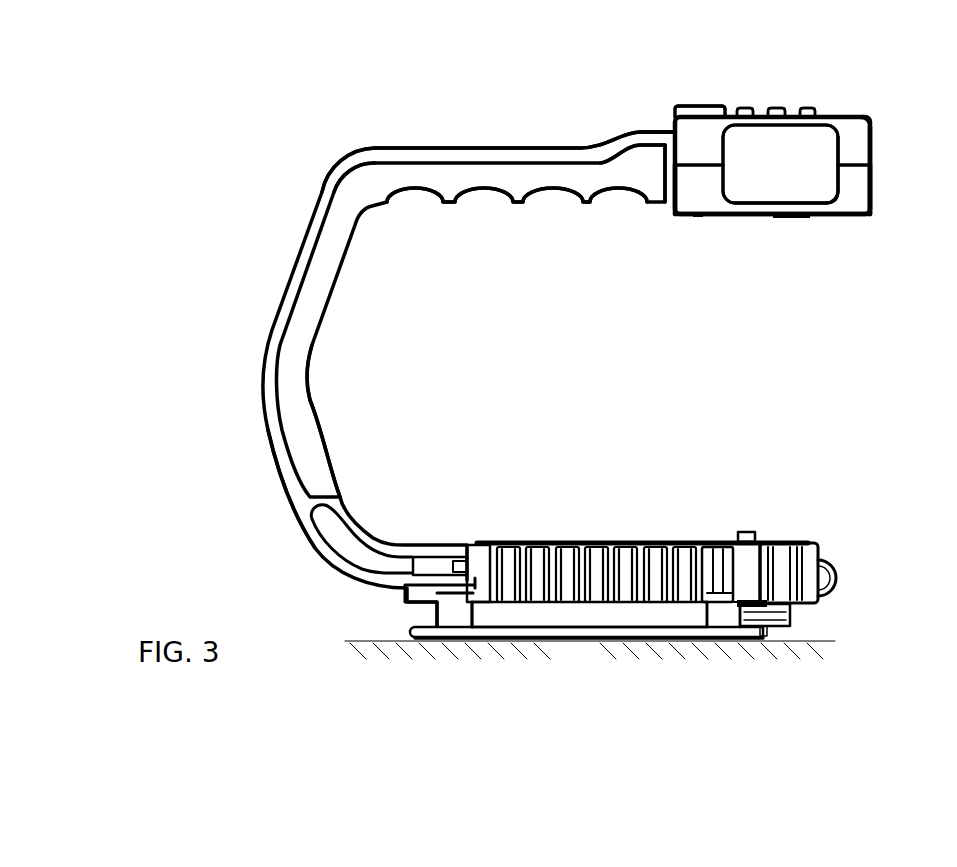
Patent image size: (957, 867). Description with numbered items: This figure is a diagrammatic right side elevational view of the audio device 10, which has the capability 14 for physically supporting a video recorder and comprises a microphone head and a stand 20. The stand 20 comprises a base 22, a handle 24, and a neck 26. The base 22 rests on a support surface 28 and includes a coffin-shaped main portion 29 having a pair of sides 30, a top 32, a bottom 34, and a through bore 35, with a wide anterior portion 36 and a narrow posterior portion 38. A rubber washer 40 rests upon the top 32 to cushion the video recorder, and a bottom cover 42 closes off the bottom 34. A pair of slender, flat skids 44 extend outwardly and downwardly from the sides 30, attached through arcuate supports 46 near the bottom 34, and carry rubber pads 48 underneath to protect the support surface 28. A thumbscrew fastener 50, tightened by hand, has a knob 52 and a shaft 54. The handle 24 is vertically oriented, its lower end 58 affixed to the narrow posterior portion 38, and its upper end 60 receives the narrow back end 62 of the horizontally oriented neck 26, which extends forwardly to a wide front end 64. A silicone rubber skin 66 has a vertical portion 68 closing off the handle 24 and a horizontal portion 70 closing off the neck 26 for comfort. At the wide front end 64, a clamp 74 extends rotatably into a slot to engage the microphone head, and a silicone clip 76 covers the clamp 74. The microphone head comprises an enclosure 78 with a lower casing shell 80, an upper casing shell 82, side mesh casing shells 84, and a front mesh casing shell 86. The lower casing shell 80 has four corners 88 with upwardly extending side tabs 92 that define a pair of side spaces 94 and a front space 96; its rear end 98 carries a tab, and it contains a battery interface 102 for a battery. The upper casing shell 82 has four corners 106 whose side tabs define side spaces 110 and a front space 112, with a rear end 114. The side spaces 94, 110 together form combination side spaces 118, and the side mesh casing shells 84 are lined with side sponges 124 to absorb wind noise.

The audio device 10 is at (171, 118).
The capability for physically supporting a video recorder 14 is at (742, 527).
The stand 20 is at (264, 325).
The base 22 is at (820, 552).
The handle 24 is at (263, 388).
The neck 26 is at (436, 147).
The support surface 28 is at (590, 651).
The main portion 29 is at (823, 593).
The pair of sides 30 is at (570, 570).
The top 32 is at (617, 541).
The bottom 34 is at (545, 603).
The through bore 35 is at (763, 542).
The wide anterior portion 36 is at (727, 542).
The narrow posterior portion 38 is at (470, 543).
The rubber washer 40 is at (508, 541).
The bottom cover 42 is at (795, 604).
The pair of skids 44 is at (642, 632).
The arcuate supports 46 is at (448, 615).
The pair of rubber pads 48 is at (623, 639).
The thumbscrew fastener 50 is at (752, 528).
The knob 52 is at (758, 622).
The shaft 54 is at (758, 540).
The lower end 58 is at (425, 557).
The upper end 60 is at (360, 180).
The narrow back end 62 is at (348, 170).
The wide front end 64 is at (622, 137).
The silicone rubber skin 66 is at (311, 383).
The vertical portion 68 is at (329, 447).
The horizontal portion 70 is at (500, 195).
The clamp 74 is at (603, 135).
The silicone clip 76 is at (648, 130).
The enclosure 78 is at (700, 203).
The lower casing shell 80 is at (852, 200).
The upper casing shell 82 is at (847, 128).
The pair of side mesh casing shells 84 is at (782, 197).
The front mesh casing shell 86 is at (872, 164).
The four corners 88 is at (871, 213).
The side tabs 92 is at (686, 200).
The pair of side spaces 94 is at (758, 200).
The front space 96 is at (872, 183).
The rear end 98 is at (665, 174).
The battery interface 102 is at (813, 200).
The four corners 106 is at (682, 106).
The pair of side spaces 110 is at (742, 150).
The front space 112 is at (873, 121).
The rear end 114 is at (673, 107).
The pair of combination side spaces 118 is at (780, 164).
The pair of side sponges 124 is at (780, 164).